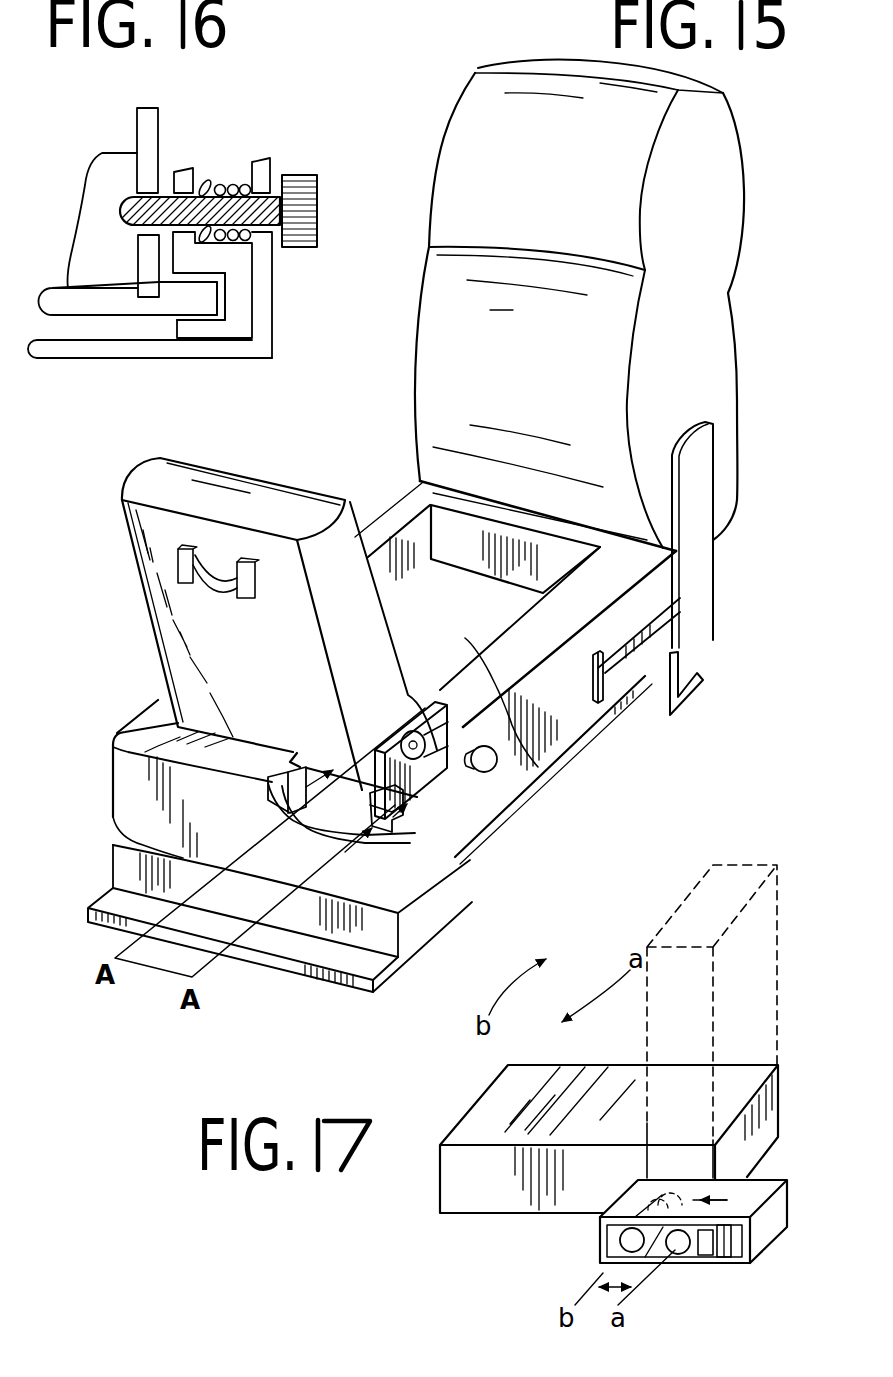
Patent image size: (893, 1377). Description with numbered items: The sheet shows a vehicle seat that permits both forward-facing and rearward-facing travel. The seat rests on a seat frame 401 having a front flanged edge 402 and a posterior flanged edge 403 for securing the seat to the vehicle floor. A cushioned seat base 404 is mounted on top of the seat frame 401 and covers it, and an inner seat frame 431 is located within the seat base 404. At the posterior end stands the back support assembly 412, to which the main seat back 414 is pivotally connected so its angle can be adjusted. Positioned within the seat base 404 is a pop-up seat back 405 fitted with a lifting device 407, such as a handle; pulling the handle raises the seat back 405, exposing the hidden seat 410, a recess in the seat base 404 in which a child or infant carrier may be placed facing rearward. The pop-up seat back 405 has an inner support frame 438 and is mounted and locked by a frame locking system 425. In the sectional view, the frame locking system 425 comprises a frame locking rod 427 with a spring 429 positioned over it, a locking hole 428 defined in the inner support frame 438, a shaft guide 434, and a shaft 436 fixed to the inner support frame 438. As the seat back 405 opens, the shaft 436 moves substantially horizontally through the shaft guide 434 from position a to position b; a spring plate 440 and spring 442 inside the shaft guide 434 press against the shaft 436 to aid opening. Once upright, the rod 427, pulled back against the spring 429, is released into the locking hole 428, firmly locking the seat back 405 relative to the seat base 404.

In FIG. 15, the seat frame 401 is at (387, 937).
In FIG. 15, the front flanged edge 402 is at (365, 972).
In FIG. 15, the posterior flanged edge 403 is at (688, 678).
In FIG. 15, the seat base 404 is at (577, 600).
In FIG. 15, the pop-up seat back 405 is at (130, 517).
In FIG. 17, the pop-up seat back 405 is at (757, 867).
In FIG. 15, the lifting device 407 is at (222, 597).
In FIG. 15, the hidden seat 410 is at (490, 763).
In FIG. 15, the back support assembly 412 is at (697, 570).
In FIG. 15, the seat back 414 is at (465, 130).
In FIG. 16, the frame locking system 425 is at (380, 68).
In FIG. 16, the frame locking rod 427 is at (305, 222).
In FIG. 15, the frame locking rod 427 is at (290, 787).
In FIG. 16, the locking hole 428 is at (137, 190).
In FIG. 16, the spring 429 is at (222, 185).
In FIG. 16, the inner seat frame 431 is at (260, 312).
In FIG. 15, the inner seat frame 431 is at (430, 803).
In FIG. 16, the shaft guide 434 is at (216, 330).
In FIG. 15, the shaft guide 434 is at (413, 700).
In FIG. 17, the shaft guide 434 is at (779, 1200).
In FIG. 16, the shaft 436 is at (200, 300).
In FIG. 17, the shaft 436 is at (622, 1238).
In FIG. 16, the inner support frame 438 is at (147, 117).
In FIG. 17, the spring plate 440 is at (703, 1250).
In FIG. 17, the spring 442 is at (733, 1248).